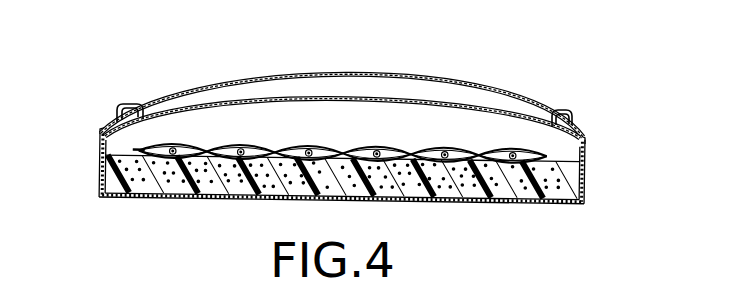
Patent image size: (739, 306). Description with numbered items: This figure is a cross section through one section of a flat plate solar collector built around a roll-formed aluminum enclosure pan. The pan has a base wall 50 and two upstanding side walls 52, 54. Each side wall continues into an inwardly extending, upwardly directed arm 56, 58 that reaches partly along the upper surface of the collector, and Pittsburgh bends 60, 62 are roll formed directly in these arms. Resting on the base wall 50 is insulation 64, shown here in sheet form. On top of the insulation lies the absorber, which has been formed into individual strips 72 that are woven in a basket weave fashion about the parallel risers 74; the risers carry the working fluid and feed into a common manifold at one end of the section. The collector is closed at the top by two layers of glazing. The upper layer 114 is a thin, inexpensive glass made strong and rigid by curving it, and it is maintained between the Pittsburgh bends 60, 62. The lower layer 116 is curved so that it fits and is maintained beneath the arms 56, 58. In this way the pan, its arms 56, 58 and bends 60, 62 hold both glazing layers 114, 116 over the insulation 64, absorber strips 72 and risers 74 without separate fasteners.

The base wall 50 is at (518, 204).
The side wall 52 is at (585, 167).
The side wall 54 is at (100, 166).
The arm 56 is at (584, 136).
The arm 58 is at (105, 132).
The Pittsburgh bend 60 is at (561, 112).
The Pittsburgh bend 62 is at (129, 103).
The insulation 64 is at (178, 192).
The strips 72 is at (370, 147).
The risers 74 is at (247, 165).
The upper layer 114 is at (373, 76).
The lower layer 116 is at (312, 97).